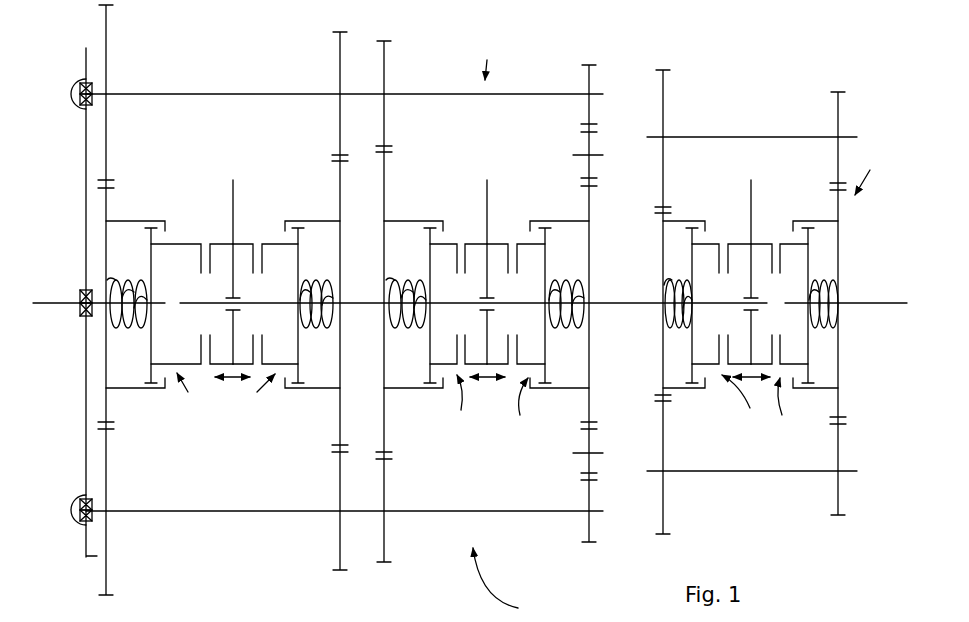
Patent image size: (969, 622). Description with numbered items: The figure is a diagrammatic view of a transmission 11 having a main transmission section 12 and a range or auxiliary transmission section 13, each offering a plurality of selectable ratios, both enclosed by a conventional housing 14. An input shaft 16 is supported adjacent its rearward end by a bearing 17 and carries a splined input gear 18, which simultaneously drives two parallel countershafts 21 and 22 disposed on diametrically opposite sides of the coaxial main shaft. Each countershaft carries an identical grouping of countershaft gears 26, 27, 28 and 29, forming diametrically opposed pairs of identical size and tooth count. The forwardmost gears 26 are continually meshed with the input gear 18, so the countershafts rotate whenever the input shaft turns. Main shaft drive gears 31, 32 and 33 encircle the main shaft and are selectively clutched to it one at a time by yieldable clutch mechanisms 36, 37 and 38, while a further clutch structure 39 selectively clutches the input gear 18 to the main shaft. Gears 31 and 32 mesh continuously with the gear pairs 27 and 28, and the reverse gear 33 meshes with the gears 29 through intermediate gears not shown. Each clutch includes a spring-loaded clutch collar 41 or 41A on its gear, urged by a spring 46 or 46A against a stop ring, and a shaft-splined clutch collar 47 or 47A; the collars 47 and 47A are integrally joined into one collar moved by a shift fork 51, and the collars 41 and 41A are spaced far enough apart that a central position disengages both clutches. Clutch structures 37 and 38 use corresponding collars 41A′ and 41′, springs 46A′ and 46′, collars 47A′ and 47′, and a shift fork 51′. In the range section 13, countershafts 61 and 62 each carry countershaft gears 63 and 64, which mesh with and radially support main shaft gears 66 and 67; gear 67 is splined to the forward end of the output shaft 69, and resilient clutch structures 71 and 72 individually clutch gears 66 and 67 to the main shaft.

The transmission 11 is at (508, 583).
The main transmission section 12 is at (488, 55).
The range transmission section 13 is at (863, 167).
The housing 14 is at (86, 164).
The input shaft 16 is at (58, 303).
The bearing 17 is at (78, 318).
The input gear 18 is at (107, 205).
The countershaft 21 is at (228, 93).
The countershaft 22 is at (245, 513).
The countershaft gear 26 is at (107, 70).
The countershaft gear 27 is at (340, 58).
The countershaft gear 28 is at (384, 65).
The countershaft gear 29 is at (588, 78).
The main shaft drive gear 31 is at (340, 176).
The main shaft drive gear 32 is at (384, 176).
The main shaft drive gear 33 is at (589, 200).
The yieldable clutch mechanism 36 is at (245, 406).
The yieldable clutch mechanism 37 is at (455, 406).
The yieldable clutch mechanism 38 is at (505, 410).
The yieldable clutch mechanism 39 is at (185, 405).
The clutch collar 41 is at (300, 348).
The clutch collar 41′ is at (548, 345).
The clutch collar 41A is at (150, 264).
The clutch collar 41A′ is at (428, 268).
The spring 46 is at (322, 275).
The spring 46′ is at (566, 275).
The spring 46A is at (125, 328).
The spring 46A′ is at (406, 330).
The clutch collar 47 is at (244, 244).
The clutch collar 47′ is at (500, 245).
The clutch collar 47A is at (222, 245).
The clutch collar 47A′ is at (475, 243).
The shift fork 51 is at (233, 212).
The shift fork 51′ is at (488, 195).
The countershaft 61 is at (735, 137).
The countershaft 62 is at (740, 473).
The countershaft gear 63 is at (665, 92).
The countershaft gear 64 is at (840, 117).
The main shaft gear 66 is at (663, 372).
The main shaft gear 67 is at (840, 208).
The output shaft 69 is at (895, 303).
The resilient clutch structure 71 is at (746, 406).
The resilient clutch structure 72 is at (795, 410).